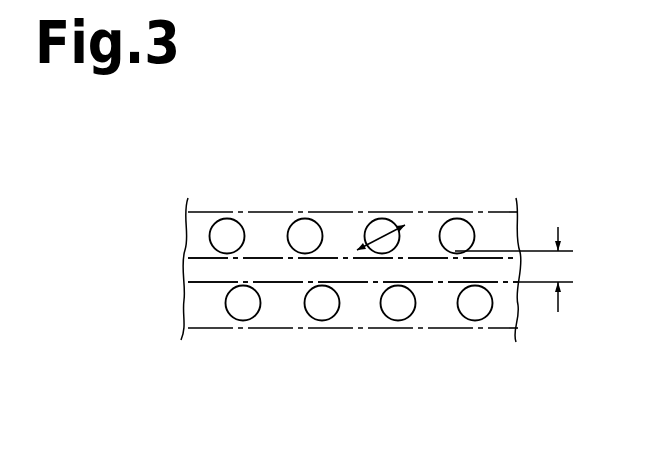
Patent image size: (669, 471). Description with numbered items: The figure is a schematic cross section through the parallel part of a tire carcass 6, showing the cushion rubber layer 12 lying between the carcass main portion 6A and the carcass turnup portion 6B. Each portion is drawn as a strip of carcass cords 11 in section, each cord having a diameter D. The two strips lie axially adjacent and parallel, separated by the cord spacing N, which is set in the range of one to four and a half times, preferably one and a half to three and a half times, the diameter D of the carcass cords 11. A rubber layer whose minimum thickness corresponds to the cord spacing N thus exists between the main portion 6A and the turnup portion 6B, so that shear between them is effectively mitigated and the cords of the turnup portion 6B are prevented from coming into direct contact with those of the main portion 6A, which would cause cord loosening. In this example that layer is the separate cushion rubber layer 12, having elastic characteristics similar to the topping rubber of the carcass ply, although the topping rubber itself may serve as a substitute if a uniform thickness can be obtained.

The carcass 6 is at (436, 188).
The carcass main portion 6A is at (489, 211).
The carcass turnup portion 6B is at (497, 328).
The carcass cords 11 is at (228, 236).
The cushion rubber layer 12 is at (203, 268).
The diameter of the carcass cords D is at (385, 228).
The cord spacing N is at (560, 268).